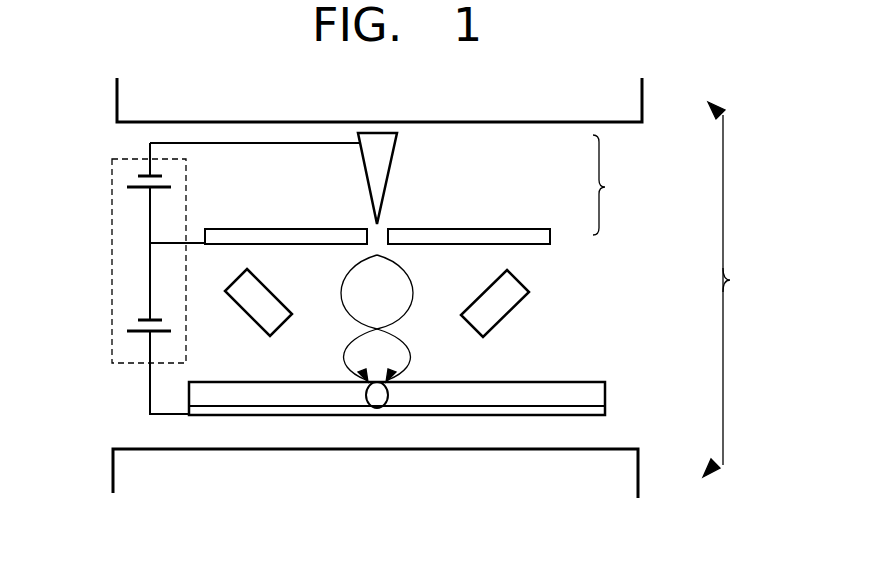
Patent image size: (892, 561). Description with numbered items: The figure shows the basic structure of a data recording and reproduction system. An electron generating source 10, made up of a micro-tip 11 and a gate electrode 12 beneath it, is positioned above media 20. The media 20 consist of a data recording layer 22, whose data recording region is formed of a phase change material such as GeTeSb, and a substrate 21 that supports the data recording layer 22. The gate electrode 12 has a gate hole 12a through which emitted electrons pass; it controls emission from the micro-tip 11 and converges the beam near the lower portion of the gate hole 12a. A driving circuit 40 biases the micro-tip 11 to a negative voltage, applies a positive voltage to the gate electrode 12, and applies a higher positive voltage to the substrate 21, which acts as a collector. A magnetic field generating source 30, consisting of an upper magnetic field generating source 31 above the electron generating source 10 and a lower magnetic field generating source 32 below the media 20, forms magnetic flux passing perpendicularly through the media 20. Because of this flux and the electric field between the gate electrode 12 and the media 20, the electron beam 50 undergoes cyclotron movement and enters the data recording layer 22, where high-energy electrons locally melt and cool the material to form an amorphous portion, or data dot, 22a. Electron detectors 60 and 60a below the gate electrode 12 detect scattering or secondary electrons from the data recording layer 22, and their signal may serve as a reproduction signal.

The electron generating source 10 is at (418, 188).
The micro-tip 11 is at (395, 155).
The gate electrode 12 is at (513, 229).
The gate hole 12a is at (377, 229).
The media 20 is at (444, 388).
The substrate 21 is at (605, 413).
The data recording layer 22 is at (597, 382).
The amorphous portion 22a is at (364, 405).
The magnetic field generating source 30 is at (731, 289).
The upper magnetic field generating source 31 is at (642, 106).
The lower magnetic field generating source 32 is at (638, 476).
The driving circuit 40 is at (111, 267).
The electron beam 50 is at (412, 290).
The electron detector 60 is at (272, 290).
The electron detector 60a is at (530, 290).